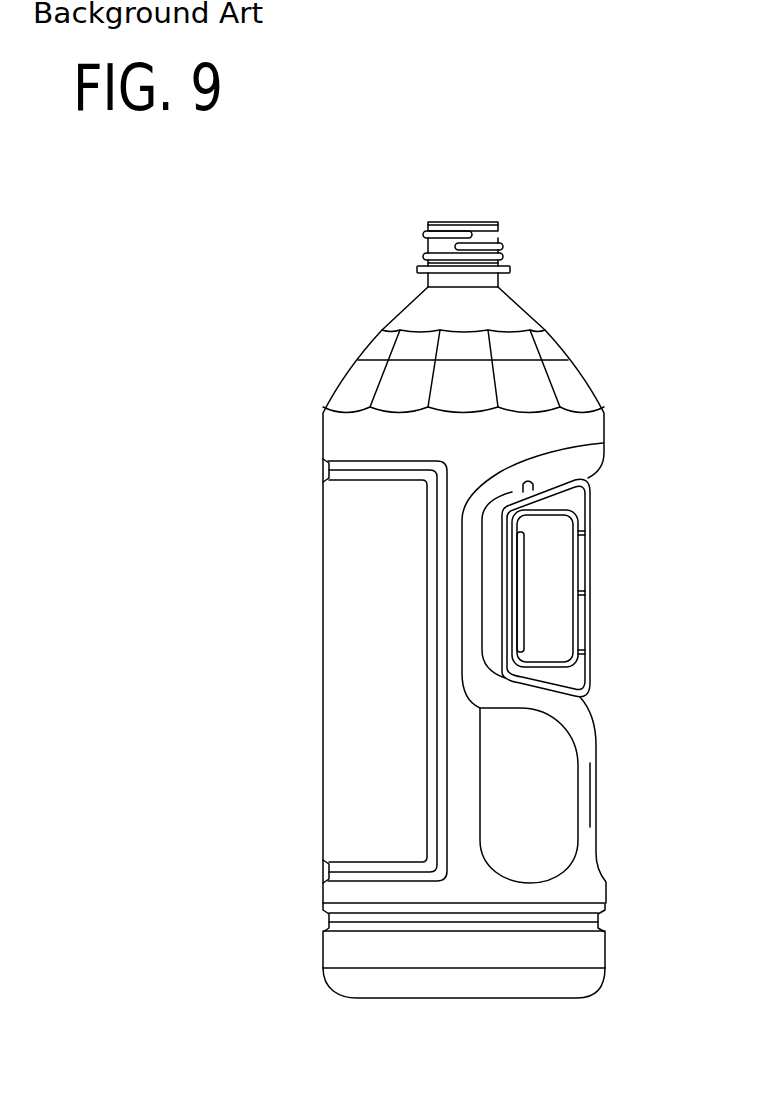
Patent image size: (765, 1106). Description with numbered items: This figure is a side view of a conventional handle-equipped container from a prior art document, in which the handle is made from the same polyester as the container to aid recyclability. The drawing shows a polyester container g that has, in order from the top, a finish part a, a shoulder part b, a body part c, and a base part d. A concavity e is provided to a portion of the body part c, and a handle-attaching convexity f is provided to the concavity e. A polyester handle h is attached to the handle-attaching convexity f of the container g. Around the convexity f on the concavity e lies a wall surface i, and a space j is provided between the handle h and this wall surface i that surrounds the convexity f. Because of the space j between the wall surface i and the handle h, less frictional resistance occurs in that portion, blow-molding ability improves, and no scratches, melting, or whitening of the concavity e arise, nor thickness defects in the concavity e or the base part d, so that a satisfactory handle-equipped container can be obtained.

The finish part a is at (493, 233).
The shoulder part b is at (557, 345).
The body part c is at (342, 515).
The base part d is at (390, 999).
The concavity e is at (557, 572).
The handle-attaching convexity f is at (520, 617).
The polyester container g is at (318, 388).
The handle h is at (573, 502).
The wall surface i is at (515, 500).
The space j is at (507, 665).